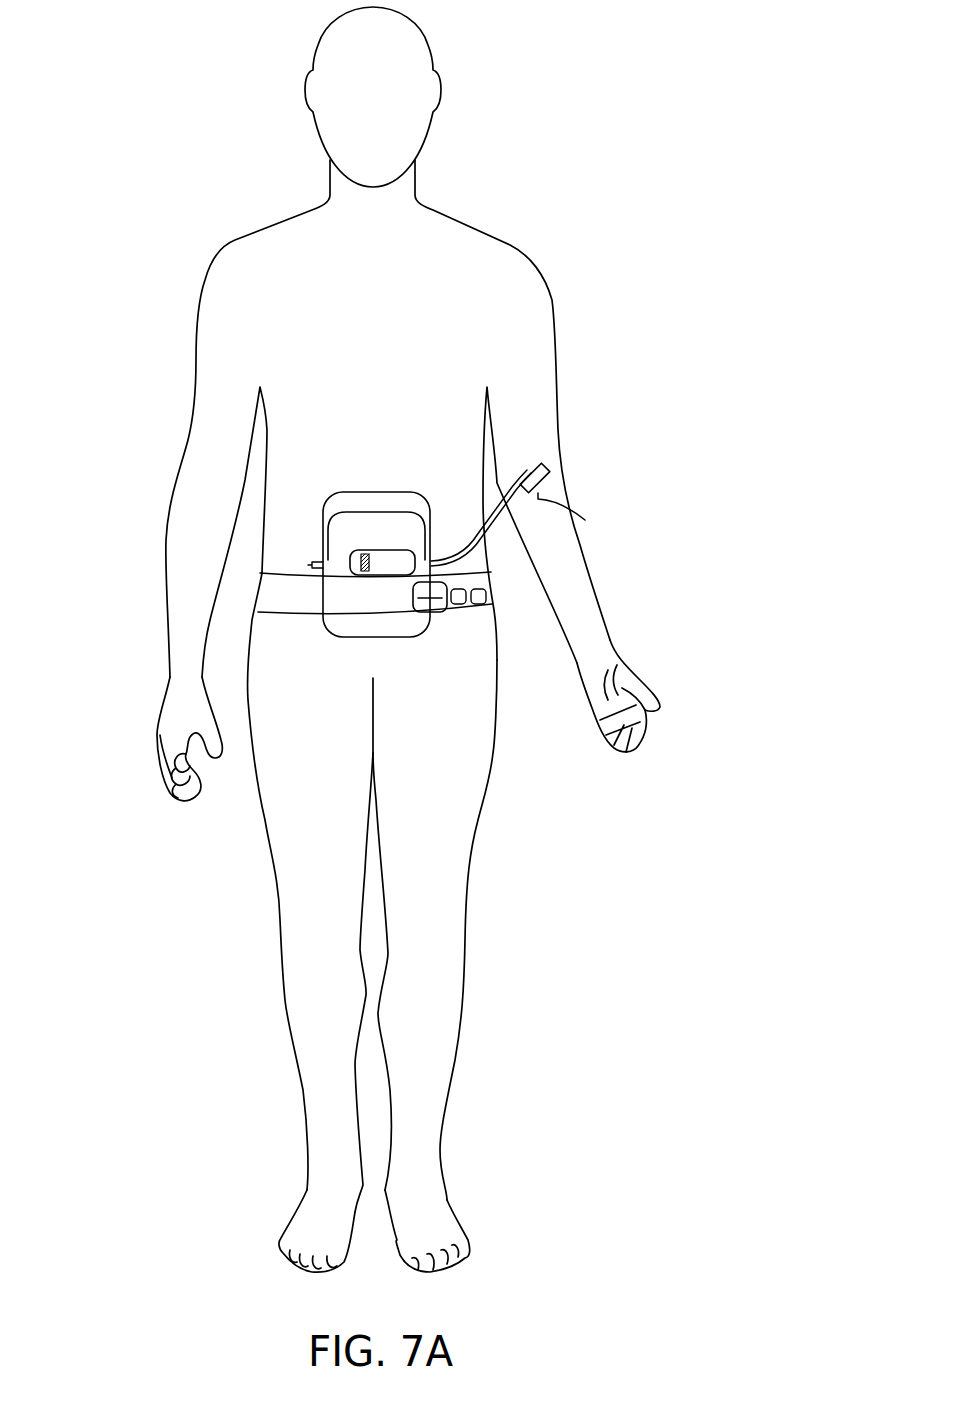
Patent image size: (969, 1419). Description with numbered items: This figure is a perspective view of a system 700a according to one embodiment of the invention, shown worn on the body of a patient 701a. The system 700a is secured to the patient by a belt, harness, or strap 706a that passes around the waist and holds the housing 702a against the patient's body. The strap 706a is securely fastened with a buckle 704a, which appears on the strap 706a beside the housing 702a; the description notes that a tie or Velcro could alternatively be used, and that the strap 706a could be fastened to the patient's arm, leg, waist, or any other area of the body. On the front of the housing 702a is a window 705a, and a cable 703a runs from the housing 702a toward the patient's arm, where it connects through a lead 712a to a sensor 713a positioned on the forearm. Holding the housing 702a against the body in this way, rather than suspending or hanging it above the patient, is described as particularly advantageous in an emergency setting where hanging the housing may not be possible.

The system 700a is at (210, 38).
The user body 701a is at (473, 315).
The housing 702a is at (393, 527).
The cable 703a is at (470, 545).
The buckle 704a is at (432, 612).
The display window 705a is at (367, 555).
The strap 706a is at (273, 593).
The sensor lead 712a is at (585, 520).
The sensor 713a is at (553, 470).